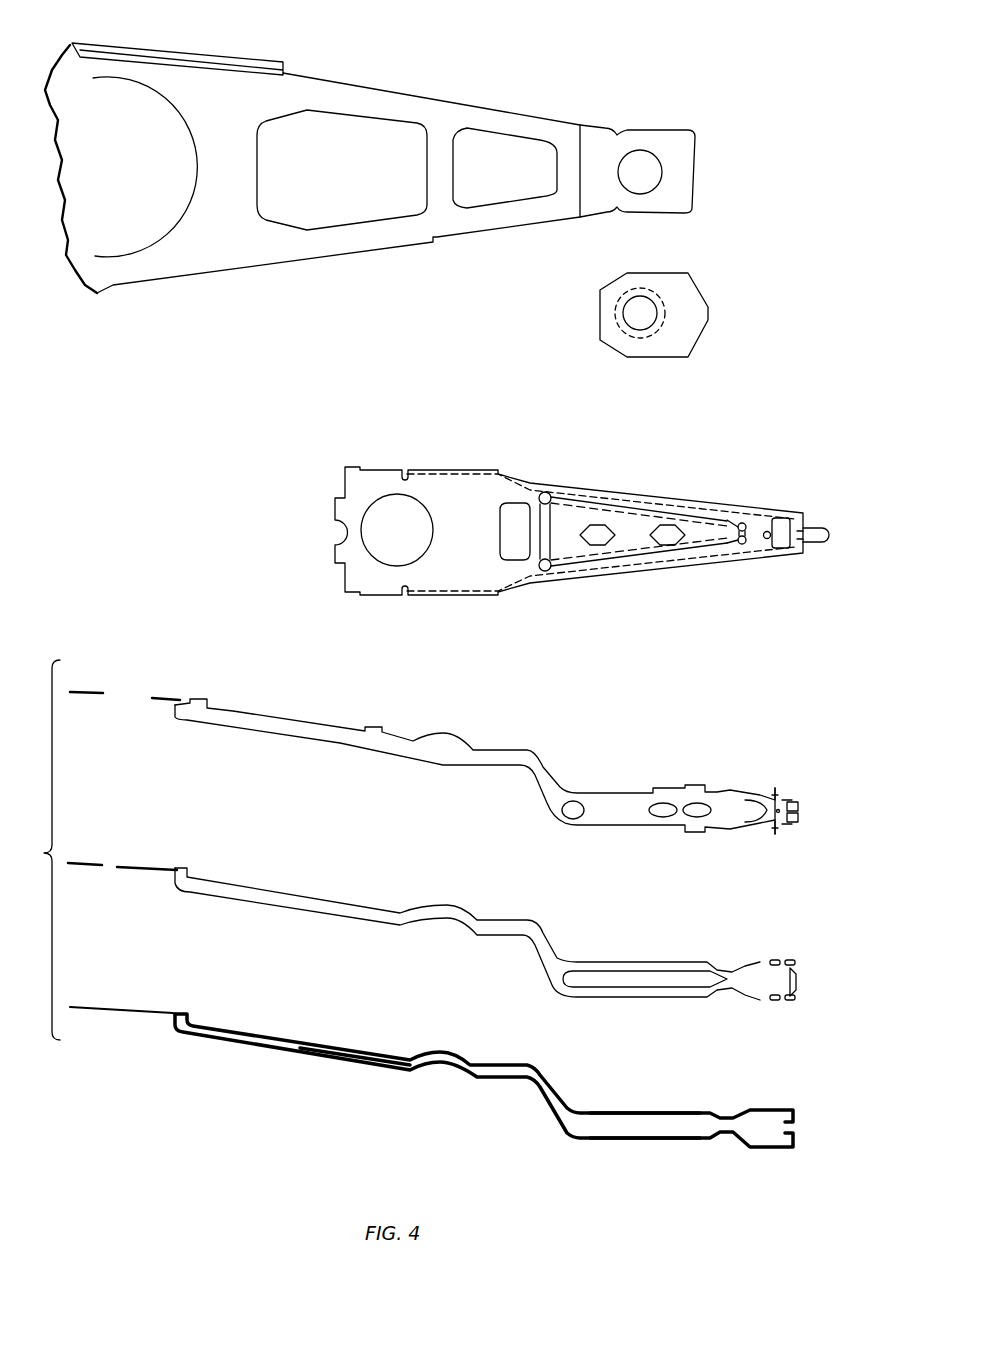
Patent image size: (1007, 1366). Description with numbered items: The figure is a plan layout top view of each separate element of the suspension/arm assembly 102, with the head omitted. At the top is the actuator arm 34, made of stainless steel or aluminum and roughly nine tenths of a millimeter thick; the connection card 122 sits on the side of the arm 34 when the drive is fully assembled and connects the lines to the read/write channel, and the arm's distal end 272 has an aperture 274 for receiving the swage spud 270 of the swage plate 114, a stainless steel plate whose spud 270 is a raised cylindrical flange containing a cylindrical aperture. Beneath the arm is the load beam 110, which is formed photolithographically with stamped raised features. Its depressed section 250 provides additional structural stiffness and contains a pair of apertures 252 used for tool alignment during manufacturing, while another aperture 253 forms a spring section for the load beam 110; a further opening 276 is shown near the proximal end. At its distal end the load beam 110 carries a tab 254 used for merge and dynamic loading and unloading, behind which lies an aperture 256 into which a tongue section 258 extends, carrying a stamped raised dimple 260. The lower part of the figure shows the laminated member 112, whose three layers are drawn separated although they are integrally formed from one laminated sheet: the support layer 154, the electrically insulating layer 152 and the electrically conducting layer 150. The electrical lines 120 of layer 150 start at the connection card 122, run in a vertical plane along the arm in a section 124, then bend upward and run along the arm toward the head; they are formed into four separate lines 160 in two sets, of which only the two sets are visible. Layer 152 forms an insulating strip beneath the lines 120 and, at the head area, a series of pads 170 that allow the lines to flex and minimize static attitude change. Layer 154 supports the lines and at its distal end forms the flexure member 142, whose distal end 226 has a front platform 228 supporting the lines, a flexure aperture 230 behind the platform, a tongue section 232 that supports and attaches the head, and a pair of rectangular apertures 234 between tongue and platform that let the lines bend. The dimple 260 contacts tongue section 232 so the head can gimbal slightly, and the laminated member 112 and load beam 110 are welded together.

The actuator arm 34 is at (260, 260).
The connection card 122 is at (195, 50).
The distal end 272 is at (695, 185).
The aperture 274 is at (640, 150).
The swage plate 114 is at (693, 293).
The swage spud 270 is at (618, 323).
The load beam 110 is at (447, 473).
The swage hole 276 is at (387, 557).
The aperture 253 is at (513, 513).
The depressed section 250 is at (625, 507).
The apertures 252 is at (663, 537).
The tongue section 258 is at (778, 548).
The aperture 256 is at (780, 523).
The dimple 260 is at (767, 540).
The tab 254 is at (820, 530).
The laminated member 112 is at (32, 850).
The section 124 is at (158, 698).
The support layer 154 is at (378, 753).
The tongue section 232 is at (753, 832).
The flexure aperture 230 is at (748, 812).
The flexure member 142 is at (780, 802).
The distal end 226 is at (798, 805).
The front platform 228 is at (798, 818).
The rectangular apertures 234 is at (793, 823).
The electrically insulating layer 152 is at (338, 918).
The pads 170 is at (793, 973).
The electrically conducting layer 150 is at (290, 1053).
The electrical lines 120 is at (375, 1067).
The lines 160 is at (640, 1112).
The suspension/arm assembly 102 is at (220, 1130).